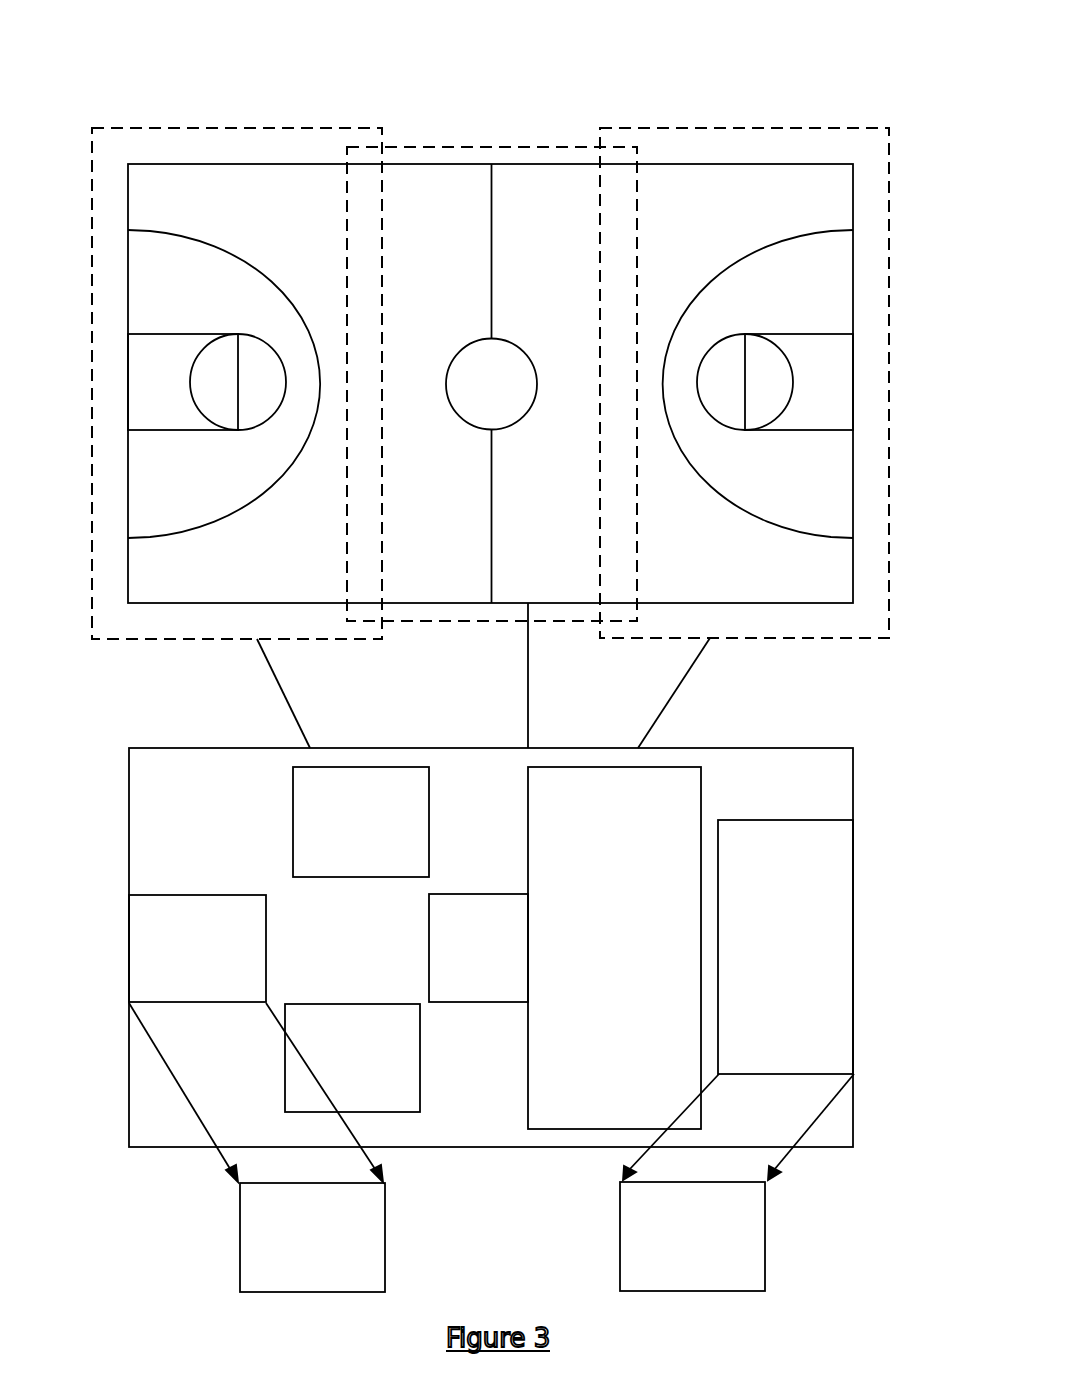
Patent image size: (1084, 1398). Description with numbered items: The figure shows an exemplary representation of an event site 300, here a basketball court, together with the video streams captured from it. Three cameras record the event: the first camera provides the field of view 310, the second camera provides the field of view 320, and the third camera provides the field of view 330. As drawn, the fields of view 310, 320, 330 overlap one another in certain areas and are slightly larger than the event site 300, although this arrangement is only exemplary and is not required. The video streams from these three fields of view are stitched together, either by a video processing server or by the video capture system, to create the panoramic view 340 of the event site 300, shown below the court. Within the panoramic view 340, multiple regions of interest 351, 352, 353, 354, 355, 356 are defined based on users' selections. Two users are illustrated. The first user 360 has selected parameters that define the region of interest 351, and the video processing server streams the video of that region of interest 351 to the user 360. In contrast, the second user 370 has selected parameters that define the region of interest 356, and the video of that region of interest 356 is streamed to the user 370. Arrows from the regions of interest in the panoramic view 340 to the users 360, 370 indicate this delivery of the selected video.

The event site 300 is at (197, 237).
The field of view 310 is at (192, 145).
The field of view 320 is at (418, 182).
The field of view 330 is at (690, 183).
The panoramic view 340 is at (854, 943).
The region of interest 351 is at (197, 948).
The region of interest 352 is at (361, 822).
The region of interest 353 is at (352, 1058).
The region of interest 354 is at (478, 948).
The region of interest 355 is at (614, 948).
The region of interest 356 is at (785, 947).
The first user 360 is at (257, 1147).
The second user 370 is at (737, 1182).